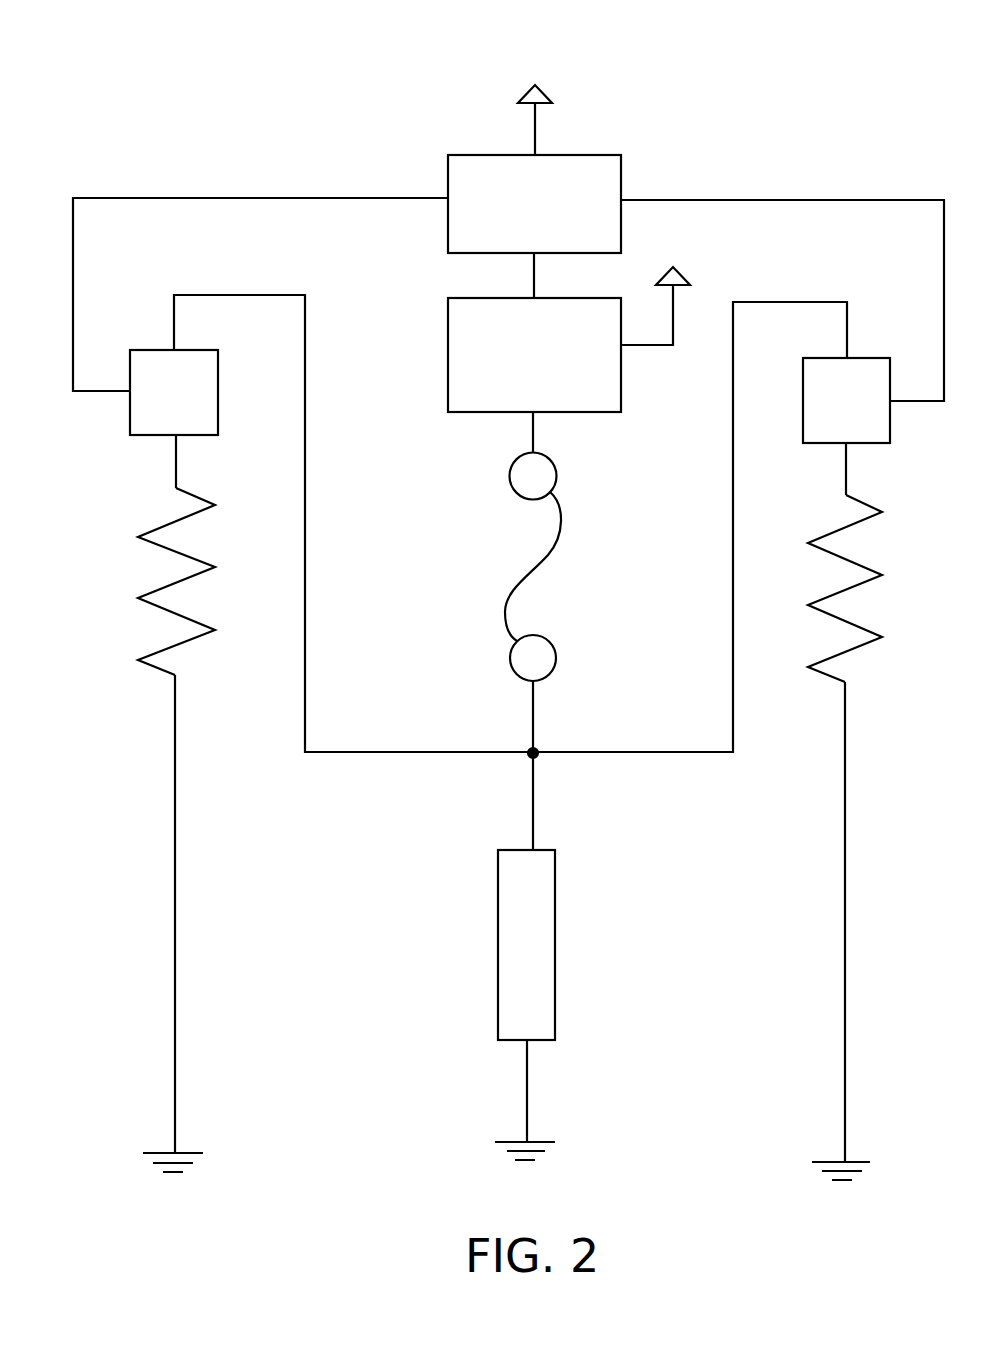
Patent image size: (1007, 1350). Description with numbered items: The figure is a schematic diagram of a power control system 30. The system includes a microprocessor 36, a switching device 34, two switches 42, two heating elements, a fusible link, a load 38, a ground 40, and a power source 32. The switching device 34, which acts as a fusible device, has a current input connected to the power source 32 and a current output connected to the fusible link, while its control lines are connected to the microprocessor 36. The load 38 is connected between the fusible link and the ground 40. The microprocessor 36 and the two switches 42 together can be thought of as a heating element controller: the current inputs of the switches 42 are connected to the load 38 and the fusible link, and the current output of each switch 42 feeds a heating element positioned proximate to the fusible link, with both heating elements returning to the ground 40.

The power control system 30 is at (778, 92).
The power source 32 is at (604, 215).
The switching device 34 is at (548, 359).
The microprocessor 36 is at (549, 211).
The load 38 is at (542, 989).
The ground 40 is at (520, 1176).
The switches 42 is at (189, 405).